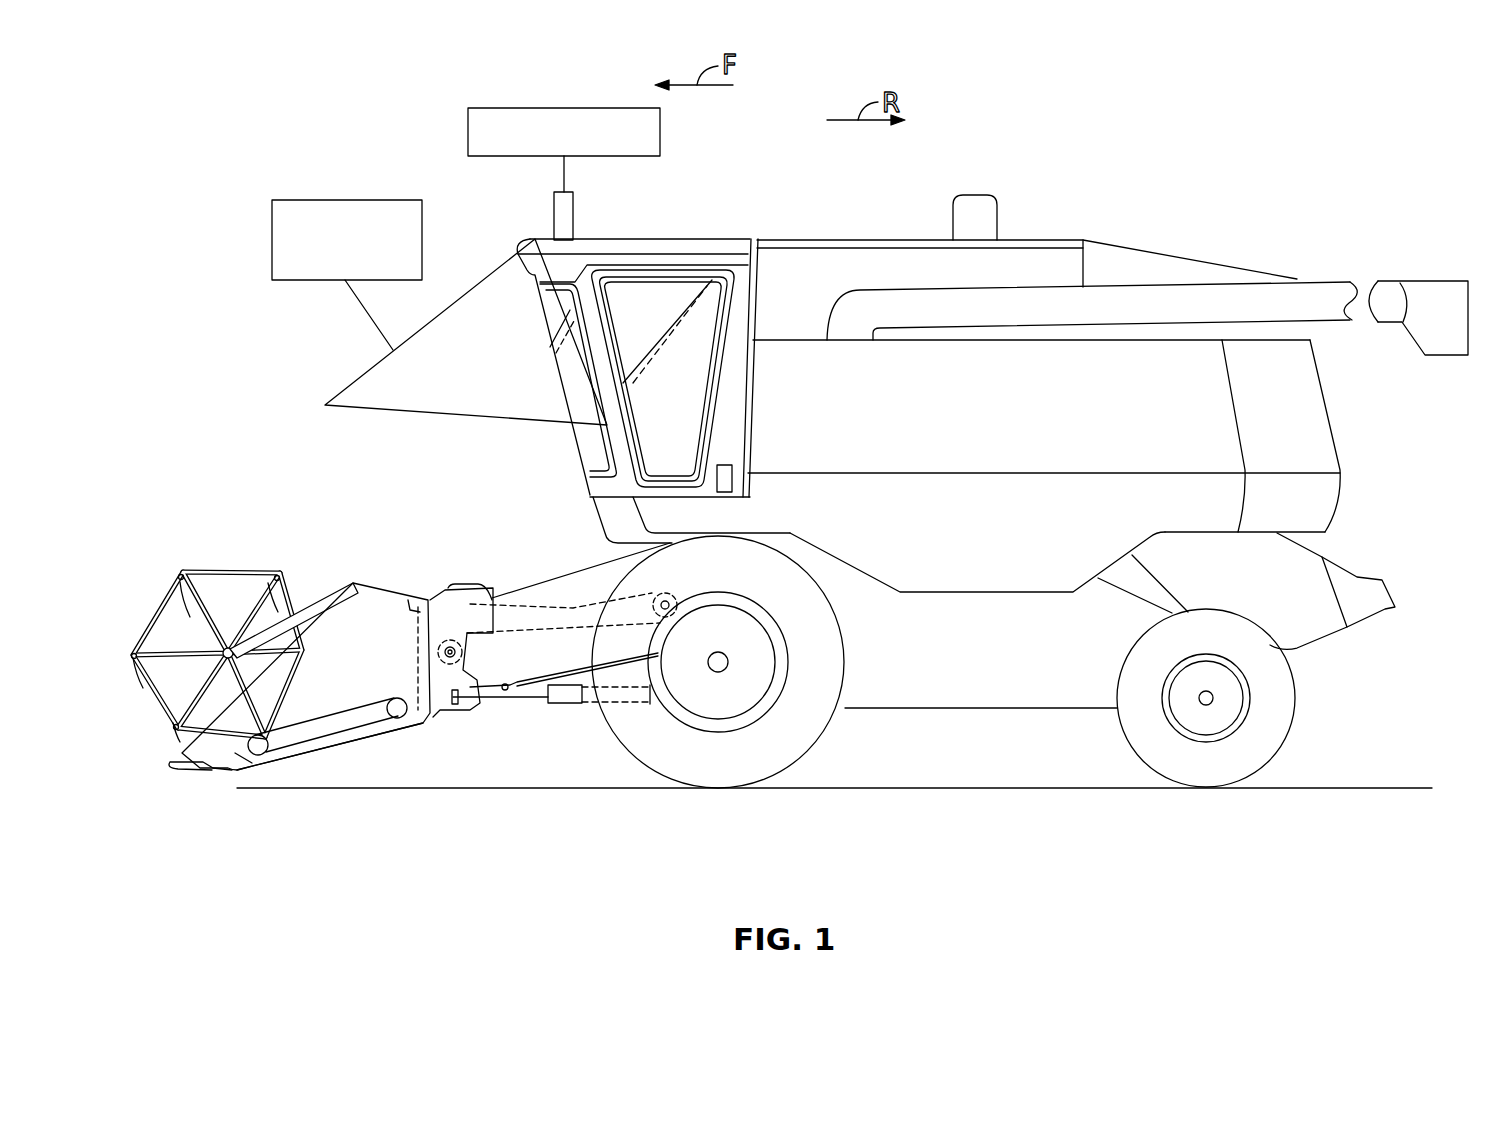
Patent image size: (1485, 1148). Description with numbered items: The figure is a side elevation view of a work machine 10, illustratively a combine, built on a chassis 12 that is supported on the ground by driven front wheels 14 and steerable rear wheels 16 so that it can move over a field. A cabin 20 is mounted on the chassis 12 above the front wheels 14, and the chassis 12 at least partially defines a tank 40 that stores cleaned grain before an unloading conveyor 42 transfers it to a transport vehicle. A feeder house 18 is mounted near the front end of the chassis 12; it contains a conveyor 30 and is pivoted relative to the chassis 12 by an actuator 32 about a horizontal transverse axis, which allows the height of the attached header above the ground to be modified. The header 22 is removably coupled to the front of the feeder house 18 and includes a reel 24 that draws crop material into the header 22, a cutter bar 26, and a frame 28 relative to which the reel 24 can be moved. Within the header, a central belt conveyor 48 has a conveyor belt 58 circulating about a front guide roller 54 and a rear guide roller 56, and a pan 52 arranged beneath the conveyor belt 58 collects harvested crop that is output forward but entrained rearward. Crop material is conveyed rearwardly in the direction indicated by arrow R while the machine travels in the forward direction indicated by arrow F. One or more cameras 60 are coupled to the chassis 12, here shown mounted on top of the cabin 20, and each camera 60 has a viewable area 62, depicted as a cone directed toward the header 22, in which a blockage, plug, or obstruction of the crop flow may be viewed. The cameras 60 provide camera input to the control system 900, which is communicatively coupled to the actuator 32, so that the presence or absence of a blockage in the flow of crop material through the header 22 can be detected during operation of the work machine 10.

The work machine 10 is at (1294, 140).
The chassis 12 is at (963, 709).
The front wheels 14 is at (722, 776).
The rear wheels 16 is at (1206, 773).
The feeder house 18 is at (553, 671).
The cabin 20 is at (573, 382).
The header 22 is at (257, 525).
The reel 24 is at (168, 594).
The cutter bar 26 is at (191, 770).
The frame 28 is at (365, 588).
The conveyor 30 is at (497, 657).
The actuator 32 is at (570, 704).
The tank 40 is at (777, 287).
The unloading conveyor 42 is at (1190, 306).
The central belt conveyor 48 is at (366, 691).
The pan 52 is at (396, 710).
The front guide roller 54 is at (260, 748).
The rear guide roller 56 is at (407, 724).
The conveyor belt 58 is at (367, 738).
The camera 60 is at (520, 107).
The viewable area 62 is at (322, 199).
The control system 900 is at (733, 478).